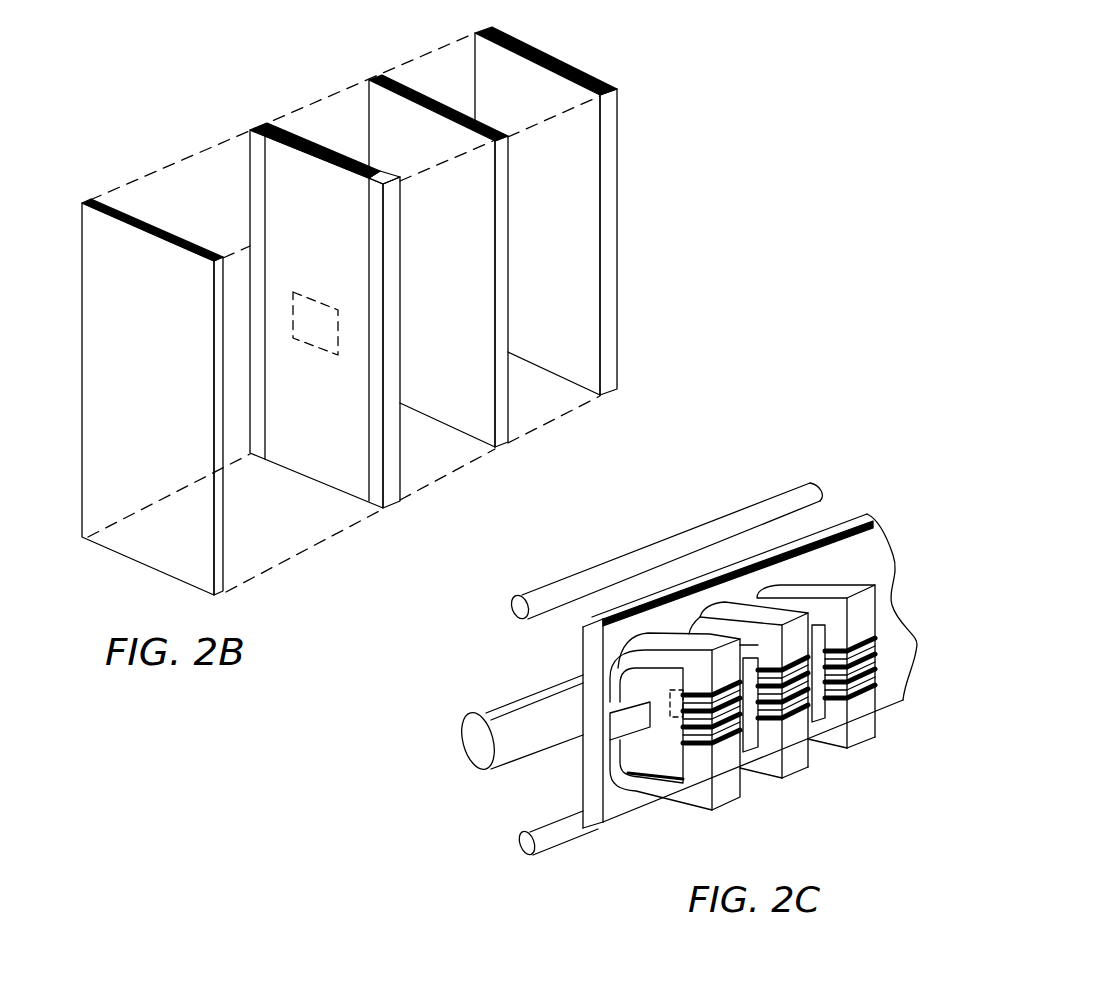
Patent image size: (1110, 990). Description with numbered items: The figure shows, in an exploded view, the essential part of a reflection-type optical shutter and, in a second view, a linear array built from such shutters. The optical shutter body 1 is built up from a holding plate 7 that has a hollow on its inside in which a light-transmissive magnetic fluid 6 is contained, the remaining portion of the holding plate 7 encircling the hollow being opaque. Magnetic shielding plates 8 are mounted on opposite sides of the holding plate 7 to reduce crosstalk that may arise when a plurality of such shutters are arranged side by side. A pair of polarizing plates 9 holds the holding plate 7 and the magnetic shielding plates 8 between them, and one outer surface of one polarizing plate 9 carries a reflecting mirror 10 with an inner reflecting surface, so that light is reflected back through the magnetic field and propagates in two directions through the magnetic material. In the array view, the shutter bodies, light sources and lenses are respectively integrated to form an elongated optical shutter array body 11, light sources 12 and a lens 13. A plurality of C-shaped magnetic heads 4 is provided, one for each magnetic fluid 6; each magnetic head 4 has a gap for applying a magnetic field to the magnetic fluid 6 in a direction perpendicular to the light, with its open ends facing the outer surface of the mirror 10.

In FIG. 2B, the optical shutter body 1 is at (284, 104).
In FIG. 2C, the magnetic head 4 is at (728, 807).
In FIG. 2B, the magnetic fluid 6 is at (315, 346).
In FIG. 2C, the magnetic fluid 6 is at (613, 732).
In FIG. 2B, the holding plate 7 is at (330, 150).
In FIG. 2B, the magnetic shielding plate 8 is at (247, 175).
In FIG. 2B, the polarizing plate 9 is at (143, 223).
In FIG. 2B, the reflecting mirror 10 is at (553, 60).
In FIG. 2C, the optical shutter array body 11 is at (628, 808).
In FIG. 2C, the light sources 12 is at (552, 588).
In FIG. 2C, the lens 13 is at (465, 758).